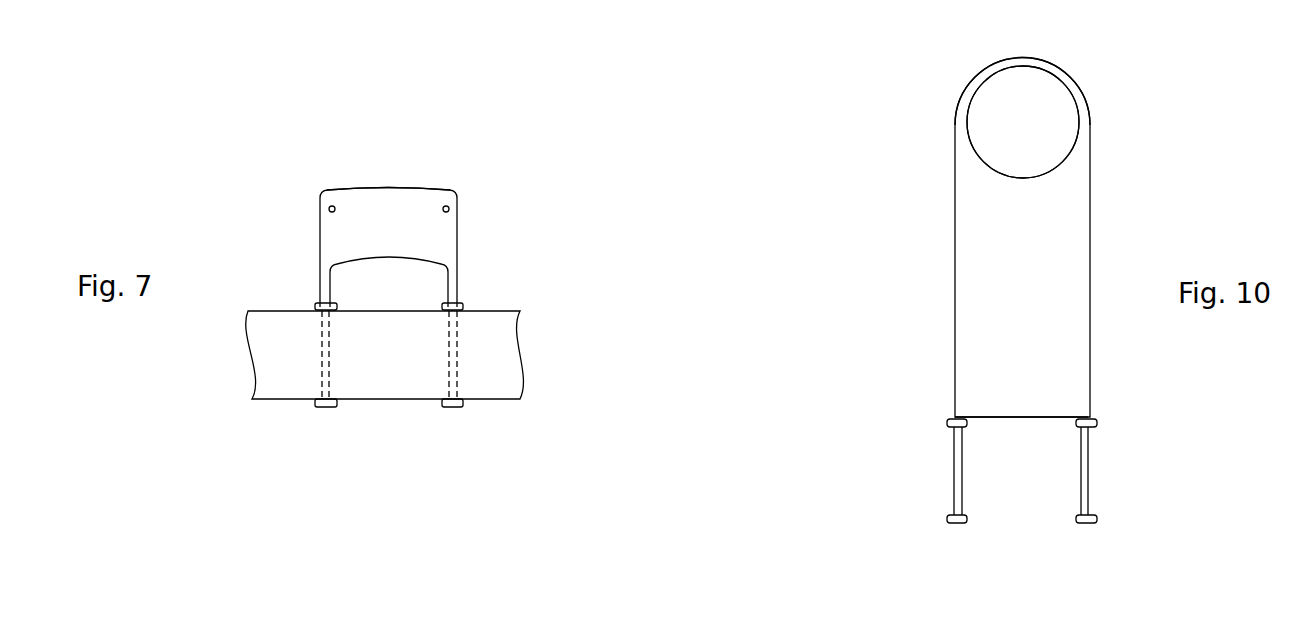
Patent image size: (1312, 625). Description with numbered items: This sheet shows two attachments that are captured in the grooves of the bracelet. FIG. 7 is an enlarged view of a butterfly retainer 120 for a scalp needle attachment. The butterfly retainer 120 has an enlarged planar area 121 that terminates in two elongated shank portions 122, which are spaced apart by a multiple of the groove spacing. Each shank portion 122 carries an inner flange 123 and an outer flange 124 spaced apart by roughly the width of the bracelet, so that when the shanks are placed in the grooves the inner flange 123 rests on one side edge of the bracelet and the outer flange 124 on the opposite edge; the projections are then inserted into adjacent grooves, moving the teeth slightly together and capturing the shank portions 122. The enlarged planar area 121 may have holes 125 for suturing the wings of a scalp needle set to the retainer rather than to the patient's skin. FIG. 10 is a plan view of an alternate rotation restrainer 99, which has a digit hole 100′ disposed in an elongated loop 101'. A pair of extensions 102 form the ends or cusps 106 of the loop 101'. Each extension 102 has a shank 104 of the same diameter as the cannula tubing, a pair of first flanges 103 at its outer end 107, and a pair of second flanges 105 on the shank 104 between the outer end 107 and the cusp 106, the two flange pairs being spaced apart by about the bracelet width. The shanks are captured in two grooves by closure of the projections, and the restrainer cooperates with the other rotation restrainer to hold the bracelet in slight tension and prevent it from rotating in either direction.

In FIG. 7, the butterfly retainer 120 is at (438, 233).
In FIG. 7, the enlarged planar area 121 is at (389, 205).
In FIG. 7, the shank portions 122 is at (448, 290).
In FIG. 7, the inner flange 123 is at (463, 303).
In FIG. 7, the outer flange 124 is at (462, 402).
In FIG. 7, the holes 125 is at (333, 205).
In FIG. 10, the alternate rotation restrainer 99 is at (1133, 198).
In FIG. 10, the digit hole 100′ is at (1027, 127).
In FIG. 10, the elongated loop 101' is at (1022, 67).
In FIG. 10, the cusp 106 is at (1023, 66).
In FIG. 10, the extensions 102 is at (957, 486).
In FIG. 10, the first flanges 103 is at (948, 522).
In FIG. 10, the shank 104 is at (957, 454).
In FIG. 10, the second flanges 105 is at (1078, 425).
In FIG. 10, the outer end 107 is at (1137, 498).